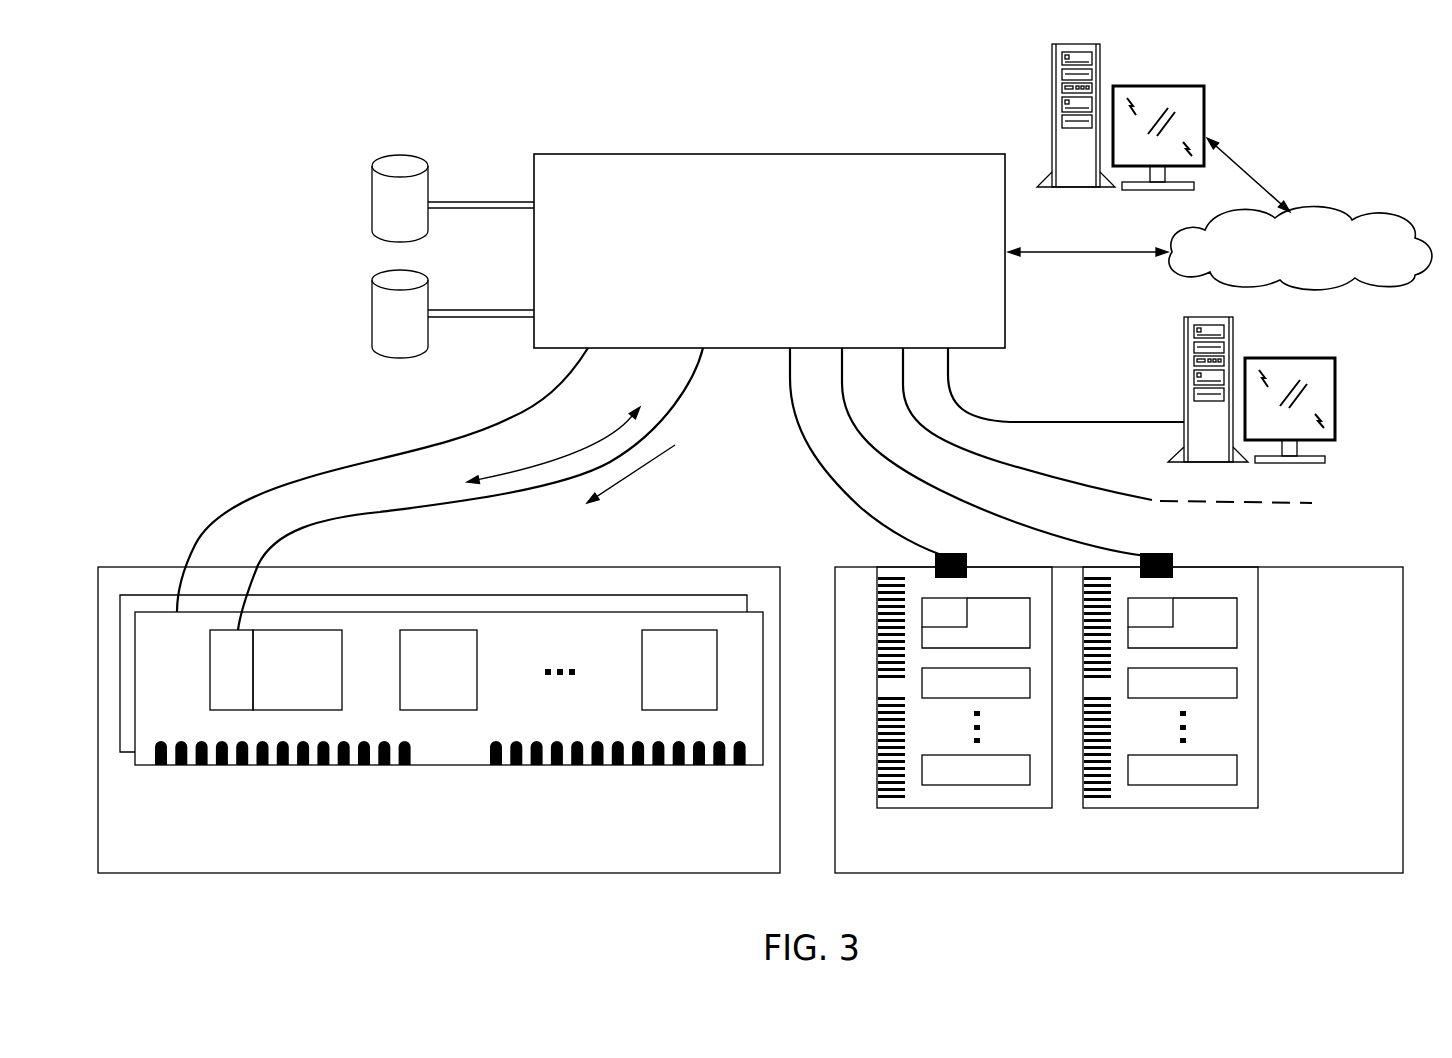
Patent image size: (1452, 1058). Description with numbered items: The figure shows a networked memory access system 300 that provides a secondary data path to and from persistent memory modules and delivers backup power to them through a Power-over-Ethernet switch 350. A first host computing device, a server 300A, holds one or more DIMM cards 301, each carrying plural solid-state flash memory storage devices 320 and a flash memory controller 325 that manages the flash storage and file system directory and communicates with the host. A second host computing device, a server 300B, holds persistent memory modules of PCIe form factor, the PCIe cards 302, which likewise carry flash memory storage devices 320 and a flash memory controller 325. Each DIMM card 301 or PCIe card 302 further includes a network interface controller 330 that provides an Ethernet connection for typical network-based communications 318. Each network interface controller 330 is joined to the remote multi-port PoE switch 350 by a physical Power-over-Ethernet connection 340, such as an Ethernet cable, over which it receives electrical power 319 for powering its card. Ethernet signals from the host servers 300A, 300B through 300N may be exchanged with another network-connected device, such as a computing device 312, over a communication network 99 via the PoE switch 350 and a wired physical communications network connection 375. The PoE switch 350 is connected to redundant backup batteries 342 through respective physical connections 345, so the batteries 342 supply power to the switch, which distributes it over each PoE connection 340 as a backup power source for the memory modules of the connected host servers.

The networked memory access system 300 is at (188, 91).
The batteries 342 is at (400, 155).
The physical connections 345 is at (482, 200).
The Power-over-Ethernet switch 350 is at (768, 143).
The computing device 312 is at (1188, 76).
The communication network 99 is at (1285, 261).
The physical communications network connection 375 is at (1085, 256).
The host server 300N is at (1316, 349).
The Power-over-Ethernet connection 340 is at (513, 497).
The network-based communications 318 is at (575, 452).
The electrical power 319 is at (653, 460).
The network interface controller 330 is at (222, 690).
The flash memory controller 325 is at (342, 675).
The flash memory storage devices 320 is at (642, 699).
The DIMM card 301 is at (668, 773).
The server 300A is at (410, 845).
The server 300B is at (1380, 845).
The PCIe card 302 is at (1133, 808).